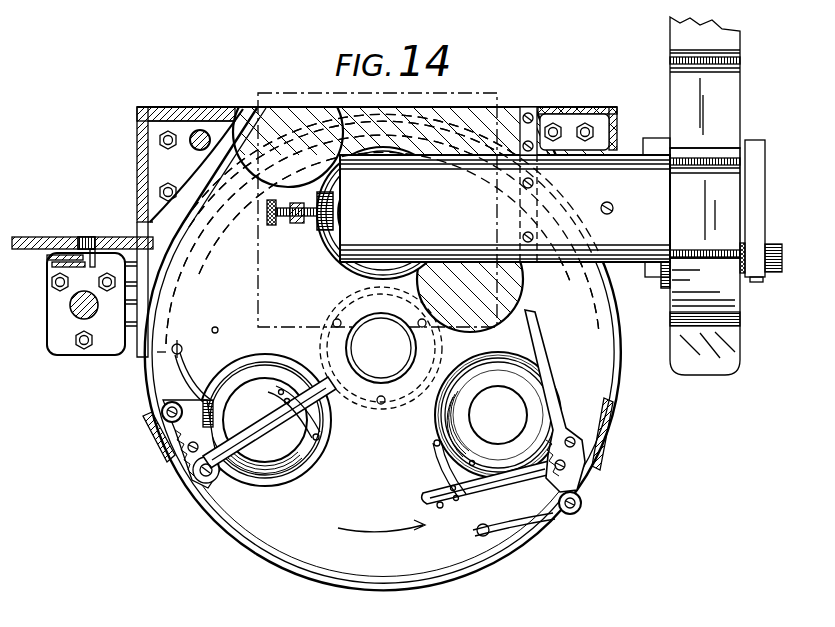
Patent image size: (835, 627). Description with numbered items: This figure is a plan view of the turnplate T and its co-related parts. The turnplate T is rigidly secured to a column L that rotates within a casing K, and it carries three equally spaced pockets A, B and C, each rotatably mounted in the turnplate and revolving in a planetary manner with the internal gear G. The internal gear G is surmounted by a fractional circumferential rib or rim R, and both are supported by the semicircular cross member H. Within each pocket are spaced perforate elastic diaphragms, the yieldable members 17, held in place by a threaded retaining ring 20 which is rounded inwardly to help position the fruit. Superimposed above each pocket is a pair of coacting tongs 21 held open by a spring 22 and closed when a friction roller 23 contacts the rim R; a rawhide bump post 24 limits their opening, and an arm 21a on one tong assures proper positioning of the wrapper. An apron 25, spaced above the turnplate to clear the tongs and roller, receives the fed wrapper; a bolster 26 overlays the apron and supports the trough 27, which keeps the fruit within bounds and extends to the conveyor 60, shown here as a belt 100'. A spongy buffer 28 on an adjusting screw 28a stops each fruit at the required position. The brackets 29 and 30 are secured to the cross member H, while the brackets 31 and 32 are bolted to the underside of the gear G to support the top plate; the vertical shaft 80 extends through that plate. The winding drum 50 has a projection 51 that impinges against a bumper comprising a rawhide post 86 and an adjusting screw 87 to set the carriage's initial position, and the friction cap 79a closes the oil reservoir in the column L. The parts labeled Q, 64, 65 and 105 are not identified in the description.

The vertical shaft 80 is at (200, 130).
The bracket 29 is at (205, 168).
The apron 25 is at (378, 204).
The bolster 26 is at (527, 107).
The bracket 30 is at (568, 114).
The bearing 105 is at (723, 62).
The belt 100' is at (735, 196).
The trough 27 is at (505, 207).
The conveyor 60 is at (705, 203).
The shaft 64 is at (782, 261).
The collar 65 is at (663, 284).
The winding drum 50 is at (70, 238).
The projection 51 is at (95, 255).
The adjusting screw 87 is at (47, 262).
The rawhide post 86 is at (83, 282).
The bracket Q is at (93, 309).
The cross member H is at (170, 230).
The buffer 28 is at (331, 214).
The adjusting screw 28a is at (298, 216).
The pocket A is at (383, 213).
The rawhide bump post 24 is at (217, 326).
The spring 22 is at (190, 385).
The tongs 21 is at (316, 374).
The arm 21a is at (437, 443).
The friction roller 23 is at (162, 409).
The bracket 31 is at (150, 452).
The bracket 32 is at (610, 437).
The pocket B is at (272, 447).
The pocket C is at (498, 415).
The yieldable member 17 is at (498, 419).
The retaining ring 20 is at (518, 372).
The friction cap 79a is at (379, 358).
The casing K is at (345, 303).
The column L is at (338, 290).
The turnplate T is at (381, 499).
The internal gear G is at (614, 370).
The circumferential rib R is at (493, 557).